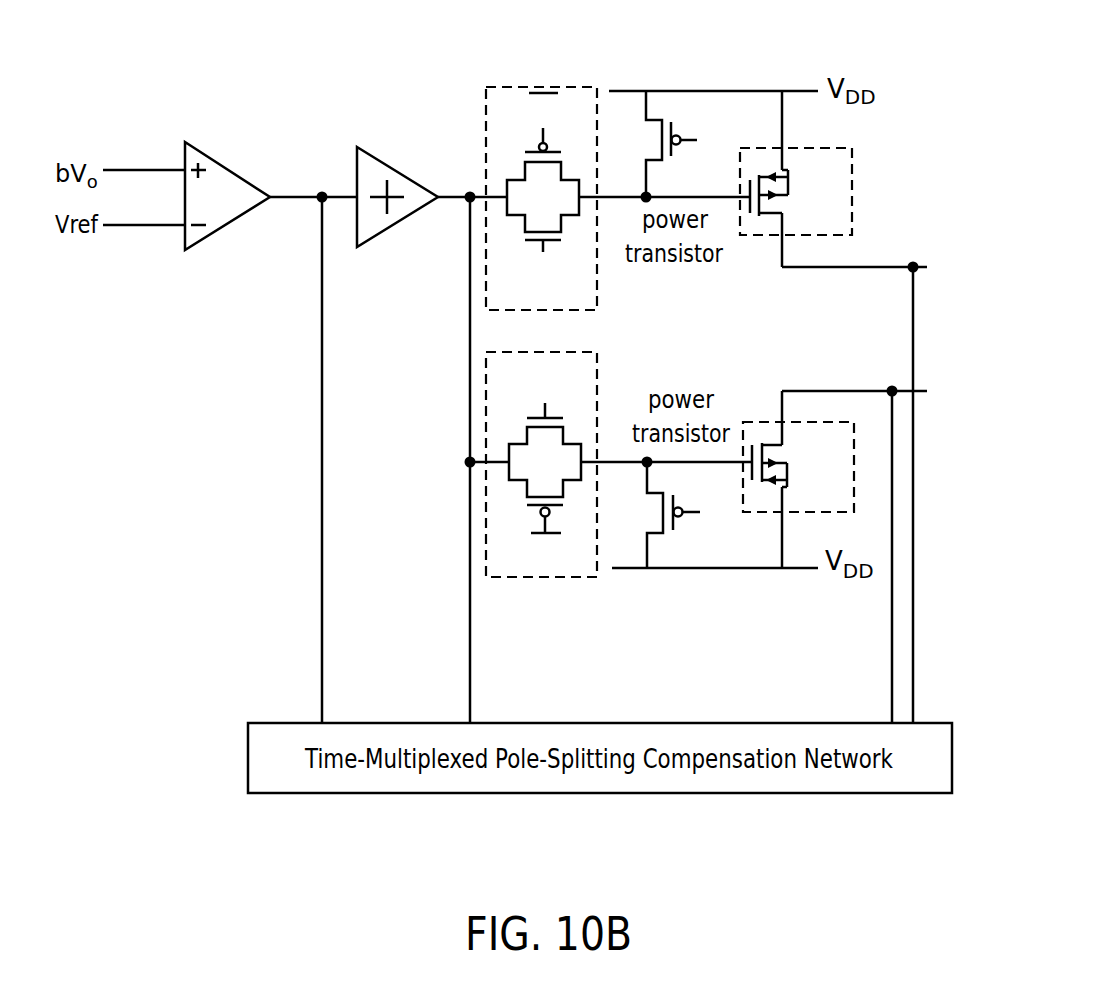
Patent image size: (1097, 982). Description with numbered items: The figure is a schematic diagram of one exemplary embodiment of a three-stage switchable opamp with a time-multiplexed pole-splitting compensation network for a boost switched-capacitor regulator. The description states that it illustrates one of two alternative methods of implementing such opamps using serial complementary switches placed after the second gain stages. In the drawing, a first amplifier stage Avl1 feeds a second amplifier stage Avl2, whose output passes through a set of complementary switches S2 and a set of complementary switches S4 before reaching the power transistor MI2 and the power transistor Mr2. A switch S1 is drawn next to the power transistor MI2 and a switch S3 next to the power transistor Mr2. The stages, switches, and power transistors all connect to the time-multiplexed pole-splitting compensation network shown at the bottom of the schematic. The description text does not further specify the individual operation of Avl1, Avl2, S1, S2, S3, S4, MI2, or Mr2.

The first amplifier stage Avl1 is at (230, 195).
The second amplifier stage Avl2 is at (405, 195).
The complementary switches S2 is at (549, 161).
The complementary switches S4 is at (566, 500).
The switch S1 is at (672, 144).
The switch S3 is at (677, 515).
The power transistor MI2 is at (796, 179).
The power transistor Mr2 is at (798, 479).